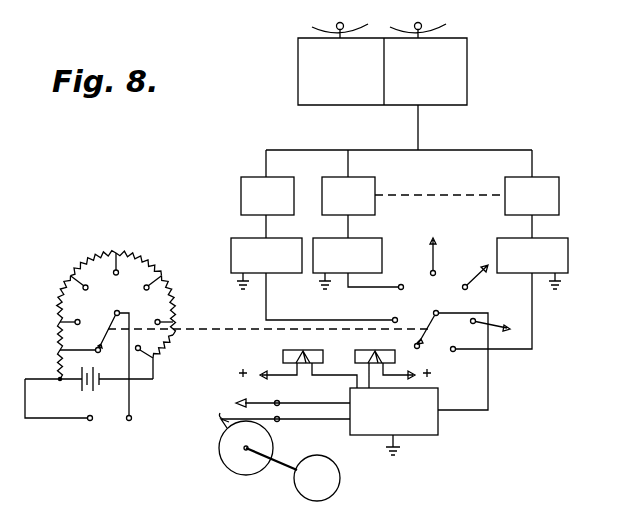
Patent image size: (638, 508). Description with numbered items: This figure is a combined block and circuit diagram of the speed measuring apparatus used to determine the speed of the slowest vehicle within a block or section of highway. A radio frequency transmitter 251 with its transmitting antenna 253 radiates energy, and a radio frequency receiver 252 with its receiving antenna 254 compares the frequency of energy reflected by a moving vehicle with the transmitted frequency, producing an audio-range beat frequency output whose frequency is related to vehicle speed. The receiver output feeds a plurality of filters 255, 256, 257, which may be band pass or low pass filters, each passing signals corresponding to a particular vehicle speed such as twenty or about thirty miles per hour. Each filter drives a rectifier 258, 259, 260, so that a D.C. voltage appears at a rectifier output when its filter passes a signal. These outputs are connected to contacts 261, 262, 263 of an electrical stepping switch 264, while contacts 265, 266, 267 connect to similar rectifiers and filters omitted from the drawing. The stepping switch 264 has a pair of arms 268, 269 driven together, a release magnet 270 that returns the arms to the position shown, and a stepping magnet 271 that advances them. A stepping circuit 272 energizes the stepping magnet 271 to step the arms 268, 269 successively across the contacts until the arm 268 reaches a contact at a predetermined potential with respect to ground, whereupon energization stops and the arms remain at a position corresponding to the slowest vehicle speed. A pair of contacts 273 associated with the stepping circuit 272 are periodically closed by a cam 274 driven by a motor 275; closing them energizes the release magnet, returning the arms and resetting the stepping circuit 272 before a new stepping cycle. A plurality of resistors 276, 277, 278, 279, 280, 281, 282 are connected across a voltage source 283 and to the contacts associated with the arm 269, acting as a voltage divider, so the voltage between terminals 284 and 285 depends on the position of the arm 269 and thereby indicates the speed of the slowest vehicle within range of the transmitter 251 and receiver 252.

The radio frequency transmitter 251 is at (298, 94).
The radio frequency receiver 252 is at (466, 97).
The transmitting antenna 253 is at (316, 28).
The receiving antenna 254 is at (442, 28).
The filter 255 is at (241, 188).
The filter 256 is at (375, 190).
The filter 257 is at (559, 190).
The rectifier 258 is at (240, 240).
The rectifier 259 is at (382, 248).
The rectifier 260 is at (566, 246).
The contact 261 is at (393, 318).
The contact 262 is at (401, 284).
The contact 263 is at (453, 352).
The electrical stepping switch 264 is at (450, 309).
The contact 265 is at (447, 257).
The contact 266 is at (470, 286).
The contact 267 is at (476, 319).
The arm 268 is at (426, 337).
The arm 269 is at (108, 326).
The release magnet 270 is at (287, 350).
The stepping magnet 271 is at (359, 350).
The stepping circuit 272 is at (430, 433).
The contacts 273 is at (236, 403).
The cam 274 is at (274, 442).
The motor 275 is at (341, 470).
The resistor 276 is at (57, 366).
The resistor 277 is at (57, 336).
The resistor 278 is at (58, 300).
The resistor 279 is at (80, 264).
The resistor 280 is at (148, 262).
The resistor 281 is at (173, 296).
The resistor 282 is at (166, 346).
The voltage source 283 is at (83, 392).
The terminal 284 is at (91, 422).
The terminal 285 is at (128, 422).